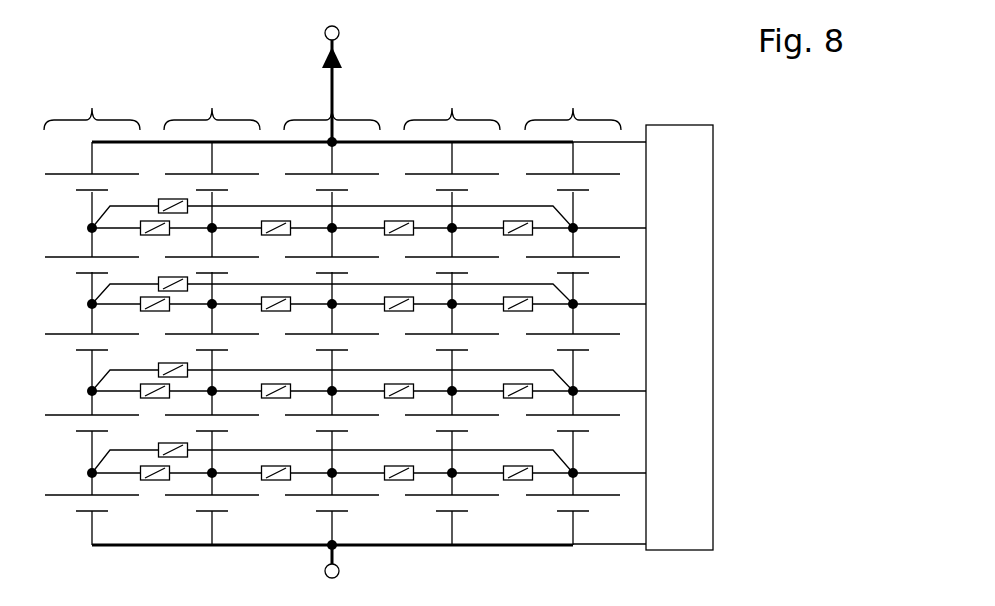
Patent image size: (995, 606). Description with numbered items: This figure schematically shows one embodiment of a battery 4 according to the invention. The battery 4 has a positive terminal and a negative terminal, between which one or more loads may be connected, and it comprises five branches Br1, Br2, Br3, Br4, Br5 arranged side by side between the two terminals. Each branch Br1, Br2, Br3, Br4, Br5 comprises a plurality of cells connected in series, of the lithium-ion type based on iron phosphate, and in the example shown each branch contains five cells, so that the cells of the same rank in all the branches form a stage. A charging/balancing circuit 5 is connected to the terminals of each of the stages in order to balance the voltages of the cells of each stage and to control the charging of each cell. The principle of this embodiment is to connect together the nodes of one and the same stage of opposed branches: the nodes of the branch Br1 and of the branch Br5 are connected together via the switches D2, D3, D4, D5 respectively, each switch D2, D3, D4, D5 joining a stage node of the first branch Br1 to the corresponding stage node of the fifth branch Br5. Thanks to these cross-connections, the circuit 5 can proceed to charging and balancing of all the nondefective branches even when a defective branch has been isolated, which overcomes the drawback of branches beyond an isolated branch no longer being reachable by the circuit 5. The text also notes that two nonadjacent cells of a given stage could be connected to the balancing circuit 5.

The battery 4 is at (509, 102).
The charging/balancing circuit 5 is at (678, 125).
The branch Br1 is at (92, 307).
The branch Br2 is at (212, 307).
The branch Br3 is at (332, 307).
The branch Br4 is at (452, 307).
The branch Br5 is at (573, 307).
The switch D2 is at (332, 205).
The switch D3 is at (332, 283).
The switch D4 is at (332, 369).
The switch D5 is at (332, 450).